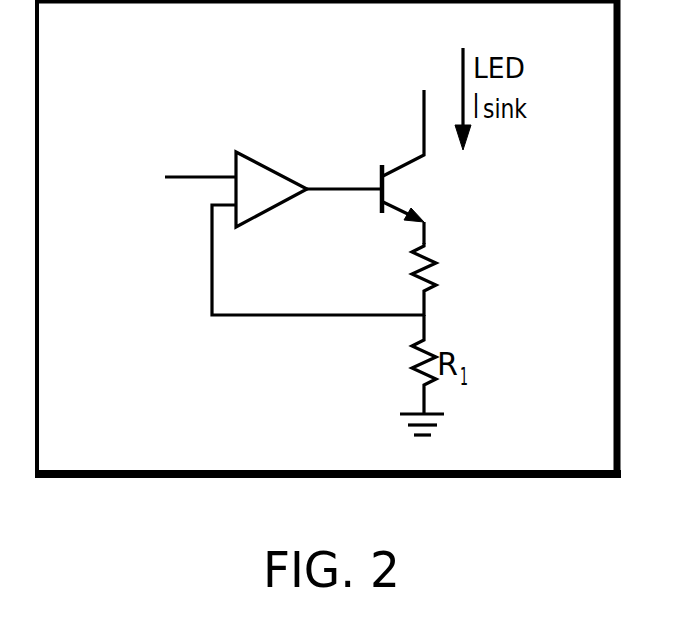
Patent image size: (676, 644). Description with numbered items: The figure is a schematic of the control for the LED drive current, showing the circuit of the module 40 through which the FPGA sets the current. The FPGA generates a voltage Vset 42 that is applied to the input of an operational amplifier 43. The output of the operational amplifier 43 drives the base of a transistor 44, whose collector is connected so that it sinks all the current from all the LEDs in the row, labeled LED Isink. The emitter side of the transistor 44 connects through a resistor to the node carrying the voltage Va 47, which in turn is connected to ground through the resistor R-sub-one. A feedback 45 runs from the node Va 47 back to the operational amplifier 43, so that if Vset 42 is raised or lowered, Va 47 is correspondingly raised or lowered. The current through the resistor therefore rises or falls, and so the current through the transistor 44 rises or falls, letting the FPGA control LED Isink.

The module 40 is at (119, 376).
The voltage Vset 42 is at (127, 165).
The operational amplifier 43 is at (262, 164).
The transistor 44 is at (402, 157).
The feedback 45 is at (283, 317).
The voltage Va 47 is at (469, 322).